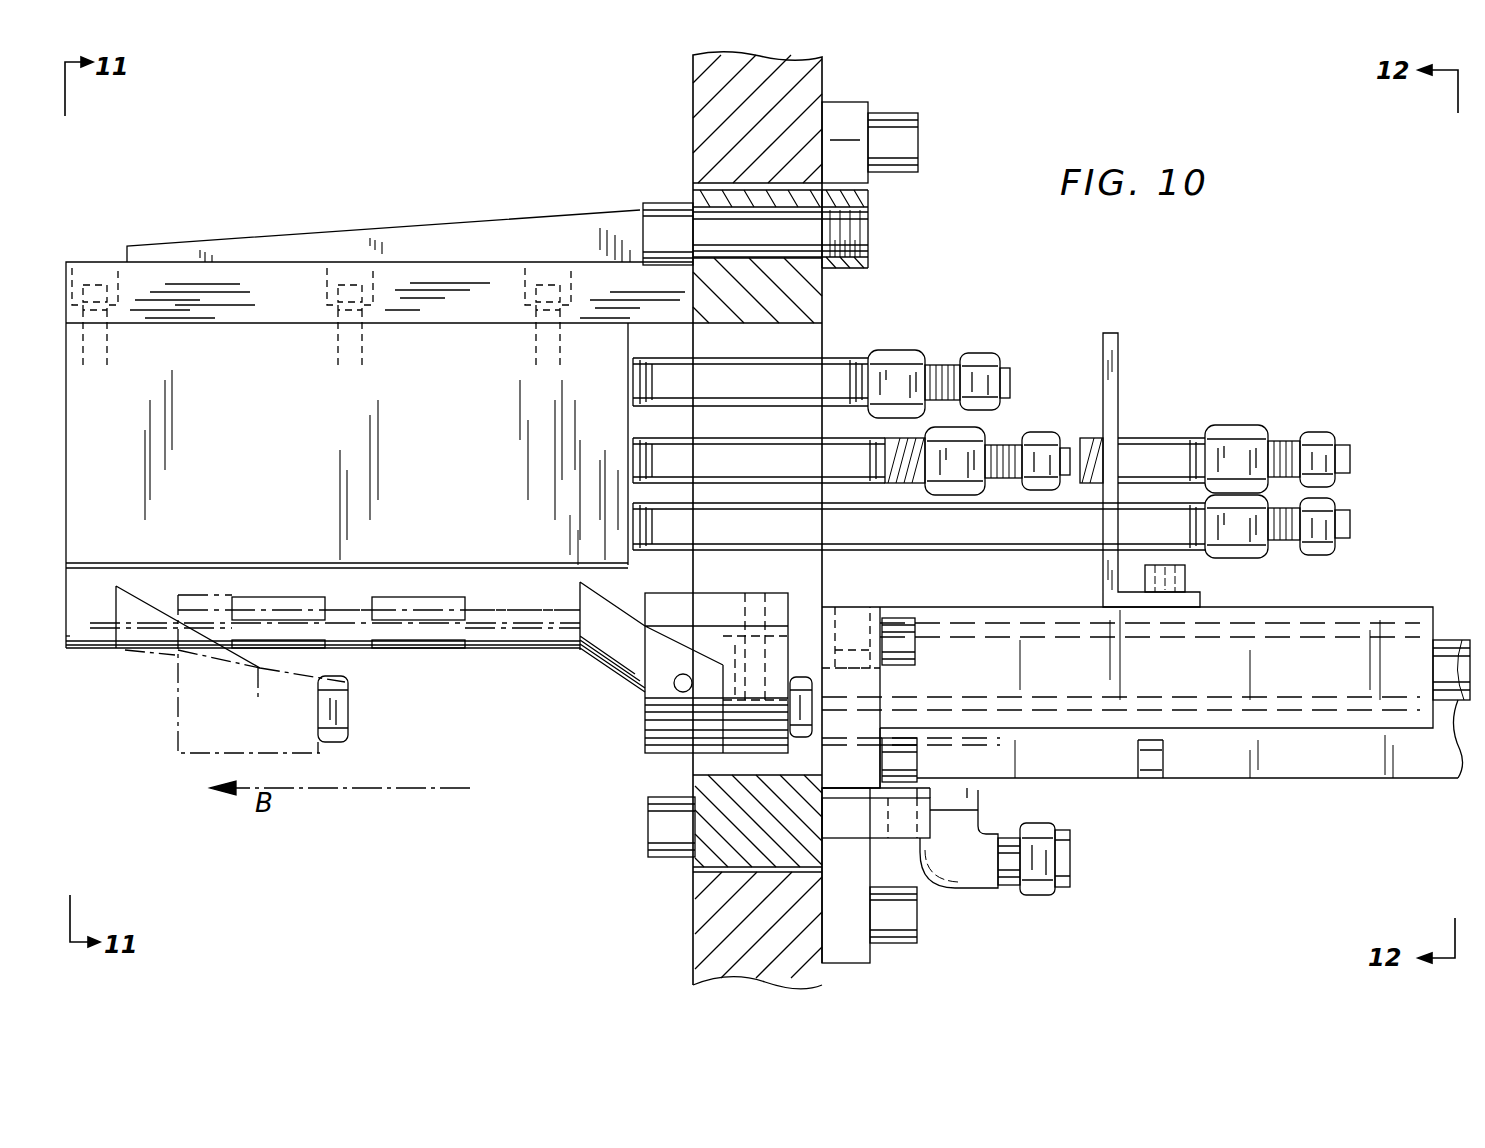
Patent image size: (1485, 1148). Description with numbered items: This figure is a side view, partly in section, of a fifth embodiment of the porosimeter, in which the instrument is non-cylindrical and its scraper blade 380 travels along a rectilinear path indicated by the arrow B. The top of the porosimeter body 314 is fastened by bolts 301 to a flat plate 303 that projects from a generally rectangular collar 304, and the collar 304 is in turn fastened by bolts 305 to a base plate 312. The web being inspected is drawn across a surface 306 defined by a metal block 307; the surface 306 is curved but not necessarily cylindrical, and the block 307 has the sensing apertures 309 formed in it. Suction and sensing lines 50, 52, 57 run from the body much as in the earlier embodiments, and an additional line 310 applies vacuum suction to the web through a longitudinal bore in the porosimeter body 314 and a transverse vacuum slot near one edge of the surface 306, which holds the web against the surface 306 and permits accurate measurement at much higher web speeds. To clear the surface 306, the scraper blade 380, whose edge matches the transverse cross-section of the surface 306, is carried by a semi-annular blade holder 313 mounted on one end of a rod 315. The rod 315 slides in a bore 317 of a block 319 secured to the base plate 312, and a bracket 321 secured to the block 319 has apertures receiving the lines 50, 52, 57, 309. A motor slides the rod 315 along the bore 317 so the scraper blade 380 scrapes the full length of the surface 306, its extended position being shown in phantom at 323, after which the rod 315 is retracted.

The line 50 is at (865, 447).
The line 52 is at (912, 490).
The line 57 is at (832, 372).
The bolts 301 is at (98, 295).
The flat plate 303 is at (450, 268).
The rectangular collar 304 is at (813, 297).
The bolts 305 is at (660, 212).
The surface 306 is at (555, 642).
The metal block 307 is at (88, 632).
The sensing apertures 309 is at (262, 610).
The line 310 is at (1185, 545).
The base plate 312 is at (805, 84).
The blade holder 313 is at (658, 745).
The porosimeter body 314 is at (257, 340).
The rod 315 is at (805, 635).
The bore 317 is at (1428, 712).
The block 319 is at (1090, 765).
The bracket 321 is at (1118, 360).
The phantom scraper blade position 323 is at (165, 660).
The scraper blade 380 is at (622, 668).